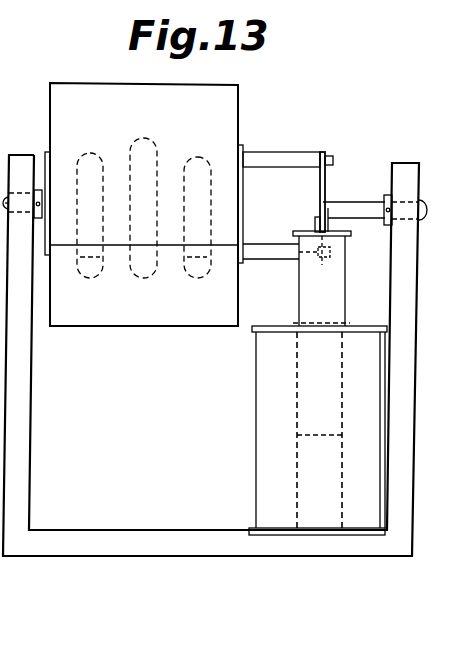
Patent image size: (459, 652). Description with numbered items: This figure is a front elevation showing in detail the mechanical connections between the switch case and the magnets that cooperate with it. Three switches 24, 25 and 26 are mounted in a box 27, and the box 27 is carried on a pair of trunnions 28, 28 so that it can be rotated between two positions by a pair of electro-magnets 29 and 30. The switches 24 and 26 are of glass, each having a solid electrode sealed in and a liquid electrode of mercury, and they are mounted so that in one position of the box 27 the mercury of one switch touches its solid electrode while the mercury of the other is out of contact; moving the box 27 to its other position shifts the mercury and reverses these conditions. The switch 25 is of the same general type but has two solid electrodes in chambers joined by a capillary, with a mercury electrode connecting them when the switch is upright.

The switch 24 is at (93, 153).
The switch 25 is at (145, 138).
The switch 26 is at (197, 157).
The box 27 is at (238, 113).
The trunnion 28 is at (360, 196).
The electro-magnet 29 is at (294, 512).
The electro-magnet 30 is at (343, 345).